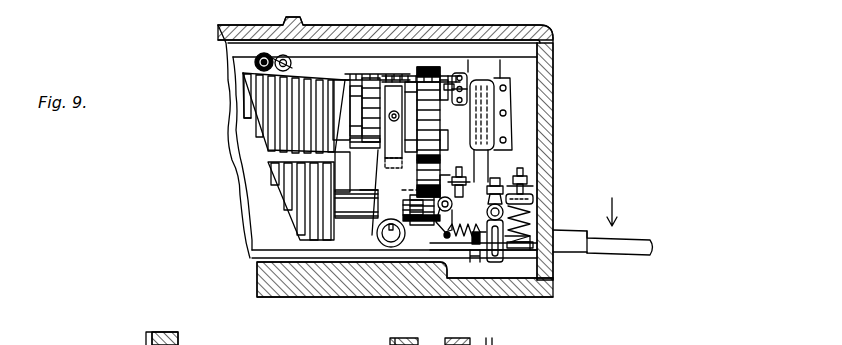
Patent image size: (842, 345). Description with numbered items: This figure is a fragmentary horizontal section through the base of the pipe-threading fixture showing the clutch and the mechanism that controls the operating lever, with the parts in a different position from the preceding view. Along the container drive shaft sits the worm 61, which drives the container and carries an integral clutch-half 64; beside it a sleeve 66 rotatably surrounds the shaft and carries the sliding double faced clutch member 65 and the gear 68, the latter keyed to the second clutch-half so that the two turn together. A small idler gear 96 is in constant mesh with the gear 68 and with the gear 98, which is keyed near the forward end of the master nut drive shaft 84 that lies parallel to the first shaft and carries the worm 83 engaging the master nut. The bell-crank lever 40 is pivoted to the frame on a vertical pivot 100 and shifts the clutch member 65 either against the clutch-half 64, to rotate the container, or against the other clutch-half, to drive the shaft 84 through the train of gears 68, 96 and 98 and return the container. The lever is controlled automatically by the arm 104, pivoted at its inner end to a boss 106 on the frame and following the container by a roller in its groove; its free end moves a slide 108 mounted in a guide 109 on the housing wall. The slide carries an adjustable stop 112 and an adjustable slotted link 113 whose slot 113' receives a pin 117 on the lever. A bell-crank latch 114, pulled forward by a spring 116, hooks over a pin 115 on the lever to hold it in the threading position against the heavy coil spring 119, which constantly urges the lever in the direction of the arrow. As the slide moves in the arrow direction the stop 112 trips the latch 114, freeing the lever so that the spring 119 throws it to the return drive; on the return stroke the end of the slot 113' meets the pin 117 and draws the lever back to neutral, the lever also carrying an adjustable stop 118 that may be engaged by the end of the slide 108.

The arm 104 is at (360, 58).
The boss 106 is at (255, 62).
The worm 61 is at (270, 128).
The worm 83 is at (300, 220).
The master nut drive shaft 84 is at (362, 208).
The clutch-half 64 is at (368, 146).
The sleeve 66 is at (360, 164).
The idler gear 96 is at (418, 175).
The gear 98 is at (424, 198).
The gear 68 is at (428, 67).
The double faced clutch member 65 is at (380, 75).
The slide 108 is at (465, 73).
The guide 109 is at (492, 96).
The adjustable stop 112 is at (458, 200).
The latch 114 is at (500, 178).
The coil spring 119 is at (528, 205).
The adjustable slotted link 113 is at (552, 222).
The slot 113' is at (506, 250).
The pin 115 is at (447, 236).
The spring 116 is at (470, 240).
The pin 117 is at (512, 250).
The adjustable stop 118 is at (482, 262).
The vertical pivot 100 is at (392, 246).
The lever 40 is at (573, 242).